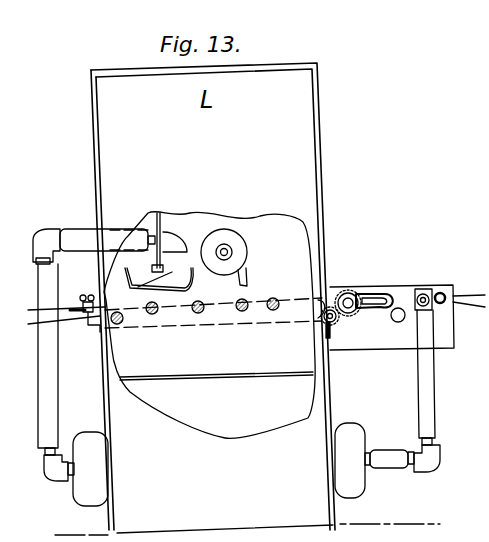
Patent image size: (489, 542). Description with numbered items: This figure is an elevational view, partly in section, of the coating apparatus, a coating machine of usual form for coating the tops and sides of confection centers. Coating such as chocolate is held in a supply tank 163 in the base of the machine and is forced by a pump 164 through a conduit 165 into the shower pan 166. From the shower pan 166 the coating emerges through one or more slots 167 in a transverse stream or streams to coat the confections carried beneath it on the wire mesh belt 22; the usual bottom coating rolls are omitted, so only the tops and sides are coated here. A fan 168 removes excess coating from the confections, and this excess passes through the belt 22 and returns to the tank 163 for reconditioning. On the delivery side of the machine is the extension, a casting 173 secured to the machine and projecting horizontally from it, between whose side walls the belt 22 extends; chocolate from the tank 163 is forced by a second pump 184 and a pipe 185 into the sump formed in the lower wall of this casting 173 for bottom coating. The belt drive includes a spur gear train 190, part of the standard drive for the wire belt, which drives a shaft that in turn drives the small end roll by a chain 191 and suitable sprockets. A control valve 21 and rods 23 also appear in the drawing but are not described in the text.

The control valve 21 is at (84, 314).
The wire mesh belt 22 is at (177, 309).
The control rods 23 is at (458, 296).
The supply tank 163 is at (216, 389).
The pump 164 is at (93, 479).
The conduit 165 is at (70, 231).
The shower pan 166 is at (103, 268).
The slot 167 is at (150, 286).
The fan 168 is at (246, 260).
The casting 173 is at (446, 346).
The pump 184 is at (360, 486).
The pipe 185 is at (420, 382).
The spur gear train 190 is at (336, 288).
The chain 191 is at (382, 290).